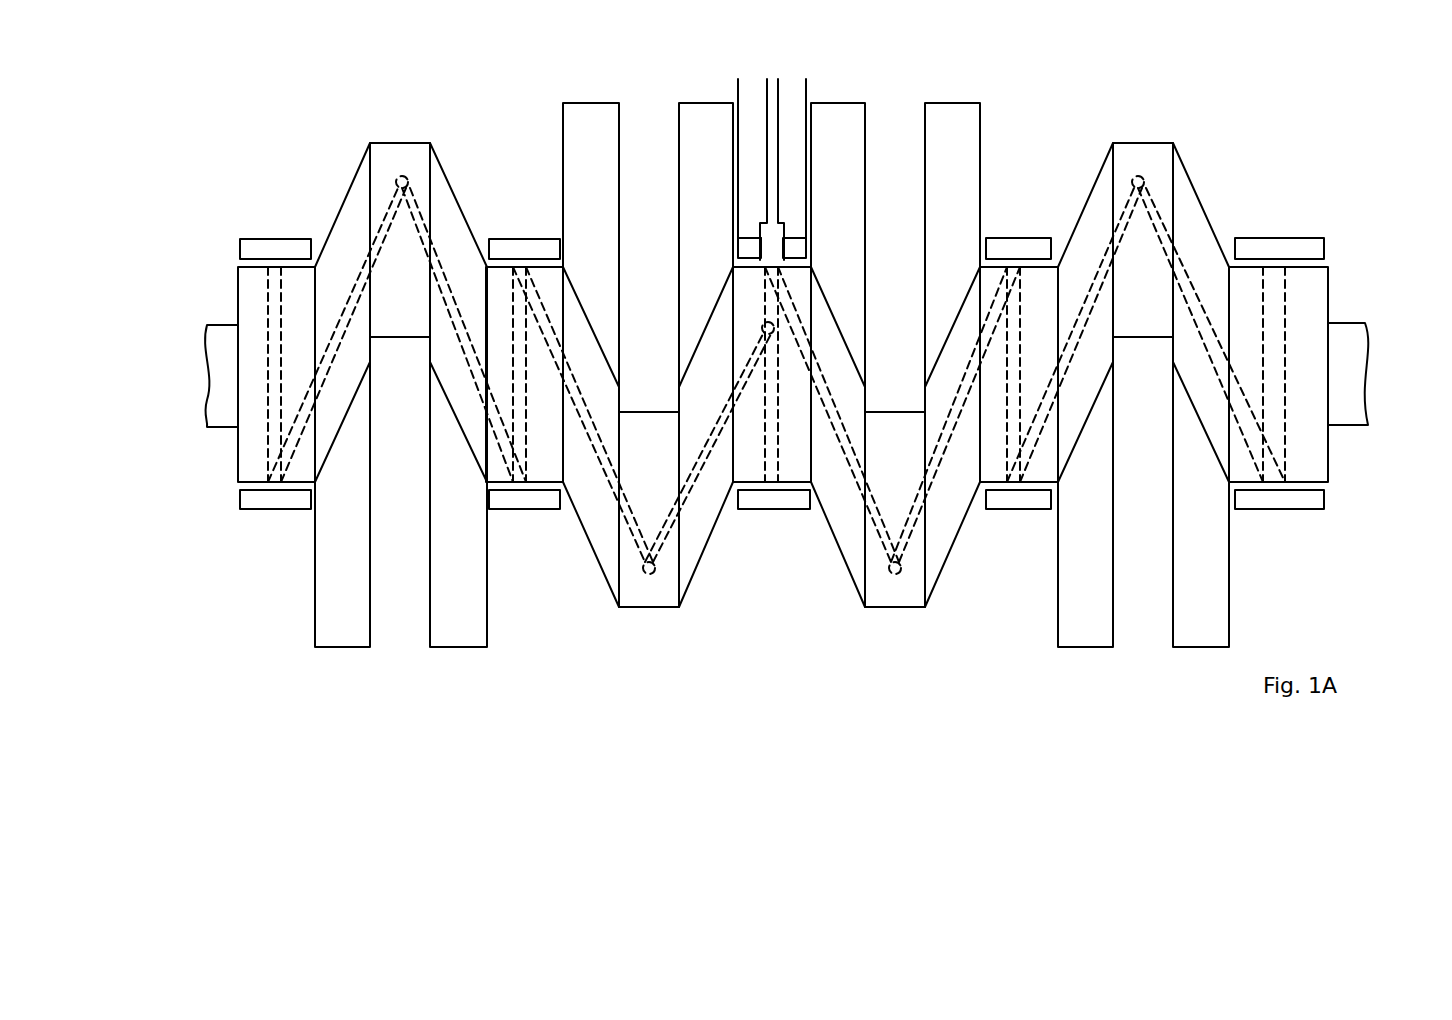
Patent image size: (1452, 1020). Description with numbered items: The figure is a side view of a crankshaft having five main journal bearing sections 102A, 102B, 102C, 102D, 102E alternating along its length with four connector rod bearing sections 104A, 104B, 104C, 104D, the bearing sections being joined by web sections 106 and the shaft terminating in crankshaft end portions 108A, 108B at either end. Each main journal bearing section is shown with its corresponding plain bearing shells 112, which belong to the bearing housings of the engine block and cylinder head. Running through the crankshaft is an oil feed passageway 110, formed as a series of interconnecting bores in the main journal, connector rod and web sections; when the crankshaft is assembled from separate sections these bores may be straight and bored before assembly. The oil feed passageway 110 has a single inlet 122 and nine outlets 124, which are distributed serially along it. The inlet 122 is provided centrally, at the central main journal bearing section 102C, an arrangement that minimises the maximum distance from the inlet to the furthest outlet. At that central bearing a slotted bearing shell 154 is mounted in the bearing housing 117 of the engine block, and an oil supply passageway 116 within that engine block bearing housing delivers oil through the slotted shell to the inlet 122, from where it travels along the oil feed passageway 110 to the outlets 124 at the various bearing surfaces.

The main journal bearing section 102A is at (250, 303).
The main journal bearing section 102B is at (549, 275).
The central main journal bearing section 102C is at (793, 475).
The main journal bearing section 102D is at (1038, 277).
The main journal bearing section 102E is at (1317, 448).
The connector rod bearing section 104A is at (403, 155).
The connector rod bearing section 104B is at (637, 593).
The connector rod bearing section 104C is at (888, 593).
The connector rod bearing section 104D is at (1160, 152).
The web section 106 is at (697, 115).
The crankshaft end portion 108A is at (222, 418).
The crankshaft end portion 108B is at (1350, 327).
The oil feed passageway 110 is at (272, 367).
The plain bearing shell 112 is at (250, 247).
The oil supply passageway 116 is at (772, 90).
The bearing housing 117 is at (790, 84).
The inlet 122 is at (772, 266).
The outlet 124 is at (400, 182).
The slotted bearing shell 154 is at (750, 236).